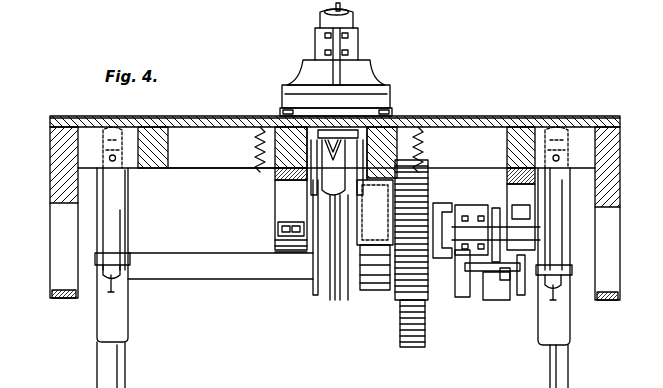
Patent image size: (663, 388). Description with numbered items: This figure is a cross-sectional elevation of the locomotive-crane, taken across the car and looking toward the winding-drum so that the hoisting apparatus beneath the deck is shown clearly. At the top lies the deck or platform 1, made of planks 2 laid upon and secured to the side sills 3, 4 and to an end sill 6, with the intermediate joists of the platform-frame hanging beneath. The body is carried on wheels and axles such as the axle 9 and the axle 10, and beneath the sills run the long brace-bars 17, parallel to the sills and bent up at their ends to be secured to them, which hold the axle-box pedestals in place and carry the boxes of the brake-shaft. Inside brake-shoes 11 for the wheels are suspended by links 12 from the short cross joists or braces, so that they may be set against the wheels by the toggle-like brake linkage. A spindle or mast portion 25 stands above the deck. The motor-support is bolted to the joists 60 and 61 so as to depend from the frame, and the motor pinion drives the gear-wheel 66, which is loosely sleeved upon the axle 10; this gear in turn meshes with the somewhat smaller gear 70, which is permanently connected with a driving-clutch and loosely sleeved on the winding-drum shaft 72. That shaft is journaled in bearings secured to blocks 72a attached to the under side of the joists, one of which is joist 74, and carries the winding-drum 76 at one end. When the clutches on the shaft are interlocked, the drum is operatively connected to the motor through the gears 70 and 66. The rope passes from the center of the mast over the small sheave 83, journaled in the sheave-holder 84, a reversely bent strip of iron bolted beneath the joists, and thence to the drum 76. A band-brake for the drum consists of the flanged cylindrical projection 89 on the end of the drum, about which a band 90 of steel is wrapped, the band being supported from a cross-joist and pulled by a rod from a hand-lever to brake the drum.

The shelf 1 is at (520, 100).
The planks 2 is at (470, 117).
The side sill 3 is at (626, 165).
The side sill 4 is at (50, 165).
The end sill 6 is at (216, 170).
The wheels and axles 9 is at (116, 372).
The axle 10 is at (216, 281).
The inside brake-shoes 11 is at (122, 318).
The links 12 is at (128, 210).
The brace-bars 17 is at (62, 296).
The spindle head 25 is at (356, 35).
The joist 60 is at (420, 128).
The joist 61 is at (162, 133).
The gear-wheel 66 is at (414, 347).
The gear 70 is at (432, 300).
The winding-drum shaft 72 is at (305, 250).
The blocks 72a is at (507, 193).
The joist 74 is at (530, 138).
The winding-drum 76 is at (311, 290).
The sheave 83 is at (392, 112).
The sheave-holder 84 is at (280, 172).
The flanged cylindrical projection 89 is at (355, 265).
The band 90 is at (381, 290).